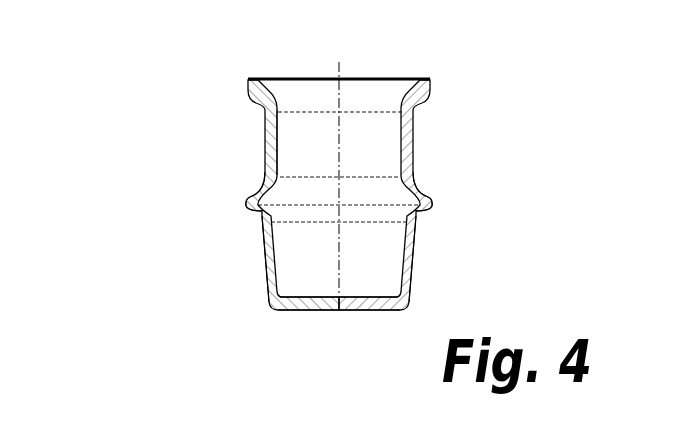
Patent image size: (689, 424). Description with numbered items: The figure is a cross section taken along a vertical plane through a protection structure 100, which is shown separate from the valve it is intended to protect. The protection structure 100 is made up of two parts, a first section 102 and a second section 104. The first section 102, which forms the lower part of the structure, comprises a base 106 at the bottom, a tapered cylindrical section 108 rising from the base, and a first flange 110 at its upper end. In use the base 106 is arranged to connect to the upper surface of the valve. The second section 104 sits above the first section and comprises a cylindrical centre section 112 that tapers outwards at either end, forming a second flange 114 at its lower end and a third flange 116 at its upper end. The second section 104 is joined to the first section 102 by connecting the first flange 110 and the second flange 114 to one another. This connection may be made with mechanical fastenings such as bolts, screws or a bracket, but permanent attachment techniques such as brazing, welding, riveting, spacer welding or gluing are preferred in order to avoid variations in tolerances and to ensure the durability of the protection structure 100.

The protection structure 100 is at (172, 127).
The first section 102 is at (271, 284).
The second section 104 is at (405, 132).
The base 106 is at (372, 308).
The tapered cylindrical section 108 is at (410, 265).
The first flange 110 is at (437, 210).
The cylindrical centre section 112 is at (275, 164).
The second flange 114 is at (246, 202).
The third flange 116 is at (249, 80).